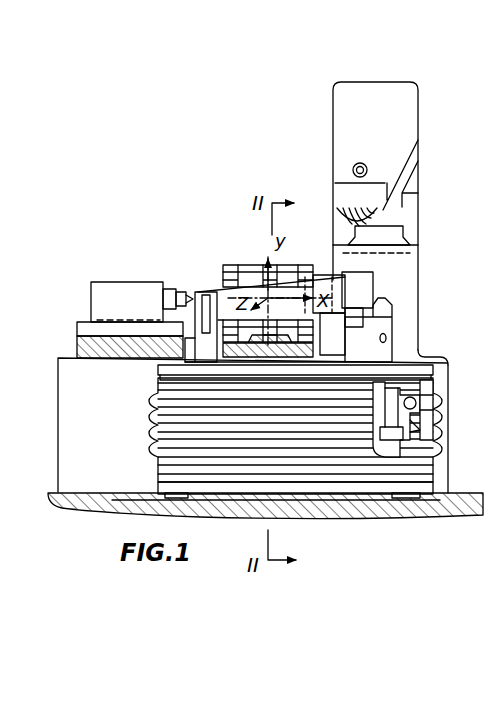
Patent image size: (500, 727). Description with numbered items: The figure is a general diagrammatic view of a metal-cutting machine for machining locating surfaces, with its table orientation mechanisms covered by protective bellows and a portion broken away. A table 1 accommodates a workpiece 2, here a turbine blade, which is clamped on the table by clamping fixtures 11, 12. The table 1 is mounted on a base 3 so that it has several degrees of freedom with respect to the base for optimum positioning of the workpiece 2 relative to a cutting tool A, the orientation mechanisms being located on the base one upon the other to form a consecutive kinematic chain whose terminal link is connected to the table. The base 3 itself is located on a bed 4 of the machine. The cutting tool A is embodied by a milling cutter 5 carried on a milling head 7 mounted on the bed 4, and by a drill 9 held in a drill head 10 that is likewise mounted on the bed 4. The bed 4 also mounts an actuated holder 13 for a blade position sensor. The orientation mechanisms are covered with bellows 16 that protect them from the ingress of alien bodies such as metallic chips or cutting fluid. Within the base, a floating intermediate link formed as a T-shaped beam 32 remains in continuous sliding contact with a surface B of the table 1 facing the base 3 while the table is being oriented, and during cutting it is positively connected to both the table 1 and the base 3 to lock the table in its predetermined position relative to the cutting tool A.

The table 1 is at (423, 363).
The workpiece 2 is at (363, 283).
The base 3 is at (427, 488).
The bed 4 is at (70, 368).
The milling cutter 5 is at (378, 217).
The milling head 7 is at (407, 130).
The drill 9 is at (170, 288).
The drill head 10 is at (118, 298).
The clamping fixture 11 is at (213, 287).
The clamping fixture 12 is at (383, 348).
The actuated holder 13 is at (293, 267).
The bellows 16 is at (430, 403).
The T-shaped beam 32 is at (436, 440).
The cutting tool A is at (332, 211).
The surface of the table B is at (420, 427).